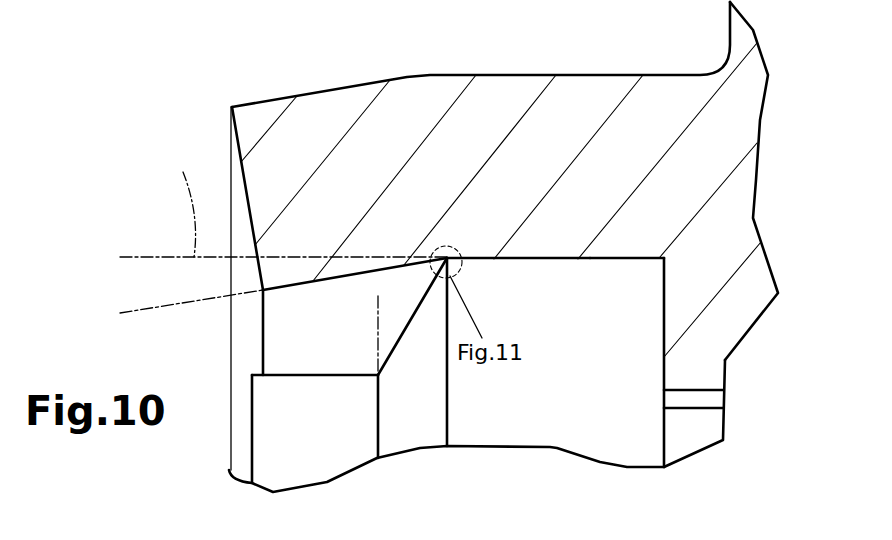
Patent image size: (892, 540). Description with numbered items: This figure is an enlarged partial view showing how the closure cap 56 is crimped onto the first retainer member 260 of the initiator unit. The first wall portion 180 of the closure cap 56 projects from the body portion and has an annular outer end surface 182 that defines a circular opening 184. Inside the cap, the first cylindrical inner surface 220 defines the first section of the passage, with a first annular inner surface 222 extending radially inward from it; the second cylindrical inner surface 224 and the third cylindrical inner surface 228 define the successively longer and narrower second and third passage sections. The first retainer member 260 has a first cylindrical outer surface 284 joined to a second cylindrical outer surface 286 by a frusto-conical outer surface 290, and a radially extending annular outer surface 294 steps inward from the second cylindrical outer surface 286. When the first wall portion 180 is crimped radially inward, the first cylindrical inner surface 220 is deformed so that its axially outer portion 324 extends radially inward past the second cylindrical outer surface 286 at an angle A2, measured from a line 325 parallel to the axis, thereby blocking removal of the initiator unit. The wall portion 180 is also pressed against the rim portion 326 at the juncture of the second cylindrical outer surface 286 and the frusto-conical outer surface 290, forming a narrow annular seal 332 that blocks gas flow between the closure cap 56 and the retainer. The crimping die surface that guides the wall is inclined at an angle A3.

The closure cap 56 is at (522, 74).
The first wall portion 180 is at (318, 123).
The annular outer end surface 182 is at (244, 183).
The circular opening 184 is at (260, 338).
The line 325 is at (170, 203).
The angle A2 is at (169, 200).
The frusto-conical outer surface 290 is at (422, 306).
The axially outer portion 324 is at (310, 283).
The first cylindrical outer surface 284 is at (298, 374).
The first retainer member 260 is at (249, 440).
The angle A3 is at (432, 357).
The rim portion 326 is at (440, 248).
The annular seal 332 is at (450, 254).
The first cylindrical inner surface 220 is at (592, 262).
The second cylindrical outer surface 286 is at (627, 257).
The annular outer surface 294 is at (666, 290).
The first annular inner surface 222 is at (663, 342).
The third cylindrical inner surface 228 is at (721, 441).
The second cylindrical inner surface 224 is at (721, 441).